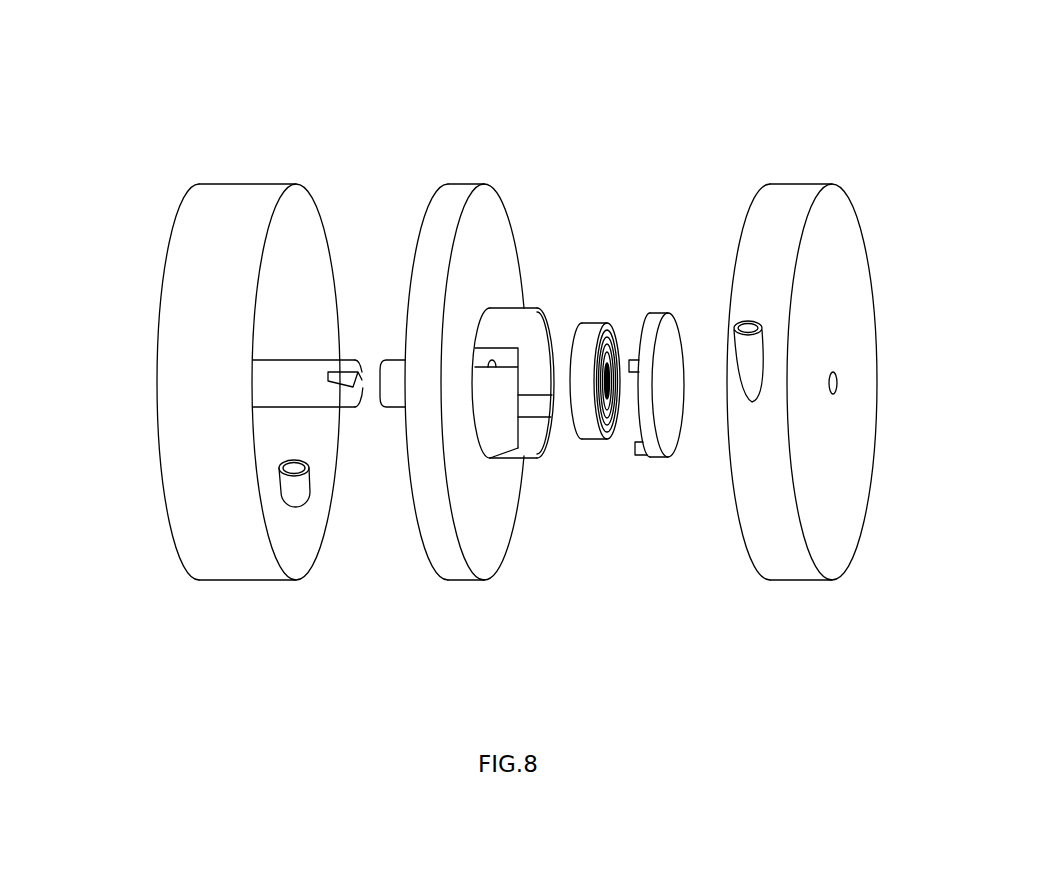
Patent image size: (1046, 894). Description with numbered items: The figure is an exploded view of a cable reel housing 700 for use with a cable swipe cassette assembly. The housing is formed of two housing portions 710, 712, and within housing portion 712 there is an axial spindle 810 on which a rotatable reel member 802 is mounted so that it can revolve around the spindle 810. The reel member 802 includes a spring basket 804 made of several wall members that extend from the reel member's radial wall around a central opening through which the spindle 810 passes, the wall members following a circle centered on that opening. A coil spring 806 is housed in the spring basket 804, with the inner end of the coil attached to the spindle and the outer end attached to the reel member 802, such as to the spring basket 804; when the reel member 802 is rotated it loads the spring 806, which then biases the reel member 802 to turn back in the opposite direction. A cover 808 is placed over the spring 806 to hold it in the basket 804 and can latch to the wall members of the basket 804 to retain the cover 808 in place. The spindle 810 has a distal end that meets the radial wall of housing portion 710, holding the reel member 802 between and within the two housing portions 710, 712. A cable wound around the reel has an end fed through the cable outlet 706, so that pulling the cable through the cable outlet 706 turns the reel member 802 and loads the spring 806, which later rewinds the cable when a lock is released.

The cable reel housing 700 is at (895, 28).
The cable outlet 706 is at (735, 323).
The housing portion 710 is at (875, 318).
The housing portion 712 is at (160, 310).
The reel member 802 is at (468, 183).
The spring basket 804 is at (512, 322).
The coil spring 806 is at (592, 427).
The cover 808 is at (657, 313).
The axial spindle 810 is at (320, 378).